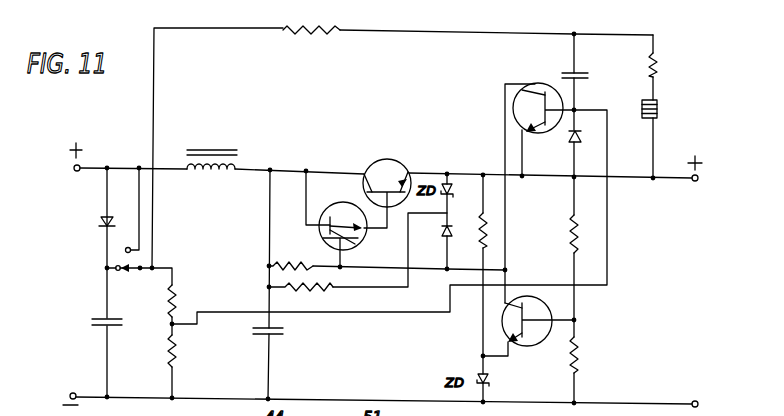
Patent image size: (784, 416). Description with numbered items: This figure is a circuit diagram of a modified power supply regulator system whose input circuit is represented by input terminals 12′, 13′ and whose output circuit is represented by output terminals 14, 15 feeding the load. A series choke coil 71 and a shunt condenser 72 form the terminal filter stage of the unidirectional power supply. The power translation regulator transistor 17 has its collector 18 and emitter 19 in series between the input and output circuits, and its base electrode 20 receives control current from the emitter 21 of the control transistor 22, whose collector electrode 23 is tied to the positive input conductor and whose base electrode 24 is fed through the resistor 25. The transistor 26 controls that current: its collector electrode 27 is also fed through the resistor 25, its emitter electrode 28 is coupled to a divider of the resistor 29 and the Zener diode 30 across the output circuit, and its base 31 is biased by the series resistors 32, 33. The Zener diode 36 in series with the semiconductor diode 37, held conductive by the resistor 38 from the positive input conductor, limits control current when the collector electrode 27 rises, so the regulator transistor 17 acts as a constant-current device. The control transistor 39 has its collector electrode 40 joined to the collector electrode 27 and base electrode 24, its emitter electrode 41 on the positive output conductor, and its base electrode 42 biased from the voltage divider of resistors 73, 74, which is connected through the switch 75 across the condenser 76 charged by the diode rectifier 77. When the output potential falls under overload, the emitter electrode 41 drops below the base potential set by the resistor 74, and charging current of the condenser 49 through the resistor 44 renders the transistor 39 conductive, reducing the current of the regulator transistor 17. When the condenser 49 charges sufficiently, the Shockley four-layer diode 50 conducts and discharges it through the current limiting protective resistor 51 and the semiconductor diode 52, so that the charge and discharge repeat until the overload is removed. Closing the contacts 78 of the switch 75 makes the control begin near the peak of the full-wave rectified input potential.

The input terminal 12′ is at (76, 172).
The input terminal 13′ is at (74, 393).
The output terminal 14 is at (697, 181).
The output terminal 15 is at (698, 400).
The power translation regulator transistor 17 is at (390, 161).
The collector 18 is at (374, 161).
The emitter 19 is at (408, 172).
The base electrode 20 is at (368, 200).
The emitter 21 is at (364, 234).
The control transistor 22 is at (323, 239).
The collector electrode 23 is at (320, 218).
The base electrode 24 is at (356, 245).
The resistor 25 is at (284, 262).
The transistor 26 is at (549, 308).
The collector electrode 27 is at (503, 319).
The emitter electrode 28 is at (520, 338).
The resistor 29 is at (497, 232).
The Zener diode 30 is at (490, 381).
The base 31 is at (524, 328).
The resistor 32 is at (582, 232).
The resistor 33 is at (580, 350).
The Zener diode 36 is at (453, 191).
The semiconductor diode 37 is at (455, 232).
The resistor 38 is at (328, 292).
The control transistor 39 is at (537, 83).
The collector electrode 40 is at (514, 103).
The emitter electrode 41 is at (515, 118).
The base electrode 42 is at (566, 103).
The resistor 44 is at (317, 27).
The condenser 49 is at (590, 72).
The Shockley 4-layer semiconductive diode 50 is at (660, 110).
The current limiting protective resistor 51 is at (665, 67).
The semiconductor diode 52 is at (565, 134).
The series choke coil 71 is at (208, 150).
The shunt condenser 72 is at (284, 333).
The resistor 73 is at (174, 293).
The voltage divider resistor 74 is at (176, 355).
The switch 75 is at (130, 272).
The condenser 76 is at (90, 322).
The diode rectifier 77 is at (98, 224).
The contacts 78 is at (125, 250).